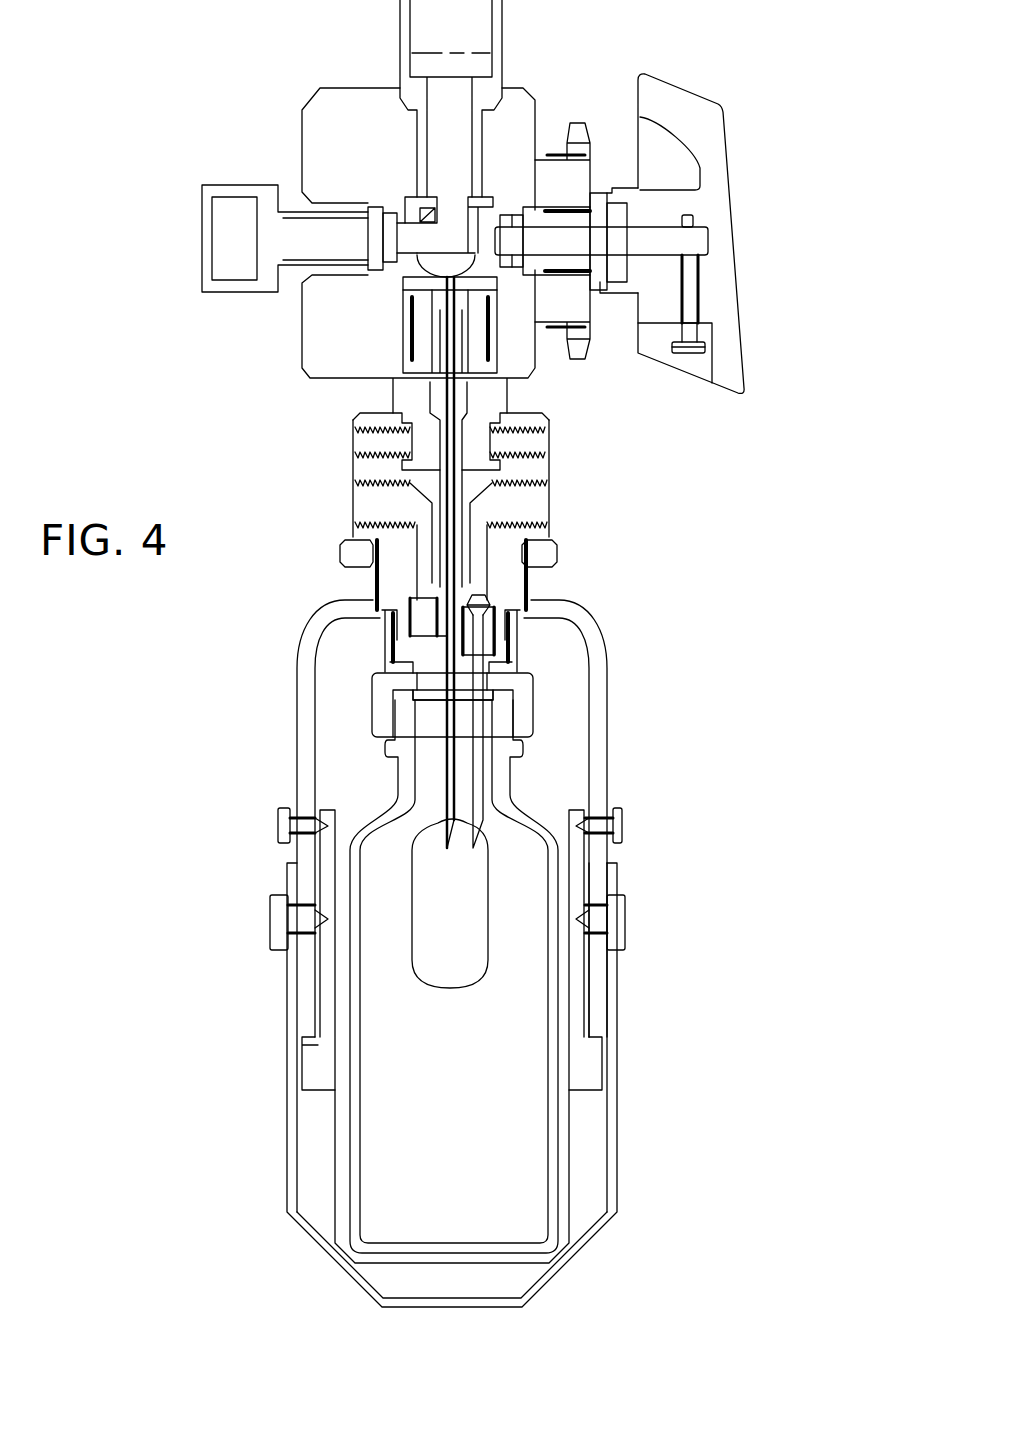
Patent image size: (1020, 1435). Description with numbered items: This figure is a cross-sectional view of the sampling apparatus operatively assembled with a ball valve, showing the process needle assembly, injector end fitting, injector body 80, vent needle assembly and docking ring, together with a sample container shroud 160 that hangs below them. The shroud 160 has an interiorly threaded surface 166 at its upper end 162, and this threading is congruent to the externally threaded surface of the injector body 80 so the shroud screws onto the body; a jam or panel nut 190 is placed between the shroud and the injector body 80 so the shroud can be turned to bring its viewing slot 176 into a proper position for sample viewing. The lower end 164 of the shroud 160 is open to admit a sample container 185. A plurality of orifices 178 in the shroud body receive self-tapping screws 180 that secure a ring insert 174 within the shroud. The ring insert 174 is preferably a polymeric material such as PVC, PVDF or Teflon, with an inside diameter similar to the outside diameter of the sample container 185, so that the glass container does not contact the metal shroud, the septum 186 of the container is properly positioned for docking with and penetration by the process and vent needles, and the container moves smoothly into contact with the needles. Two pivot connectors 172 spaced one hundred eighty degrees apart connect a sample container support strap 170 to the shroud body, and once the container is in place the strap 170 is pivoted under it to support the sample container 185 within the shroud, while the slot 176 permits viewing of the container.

The injector body 80 is at (540, 468).
The shroud 160 is at (620, 718).
The upper end 162 is at (555, 572).
The lower end 164 is at (605, 1040).
The interiorly threaded surface 166 is at (355, 558).
The sample container support strap 170 is at (600, 970).
The pivot connectors 172 is at (280, 918).
The ring insert 174 is at (580, 885).
The viewing slot 176 is at (445, 915).
The orifices 178 is at (312, 813).
The self-tapping screws 180 is at (290, 825).
The sample container 185 is at (560, 1175).
The septum 186 is at (440, 697).
The jam or panel nut 190 is at (560, 548).